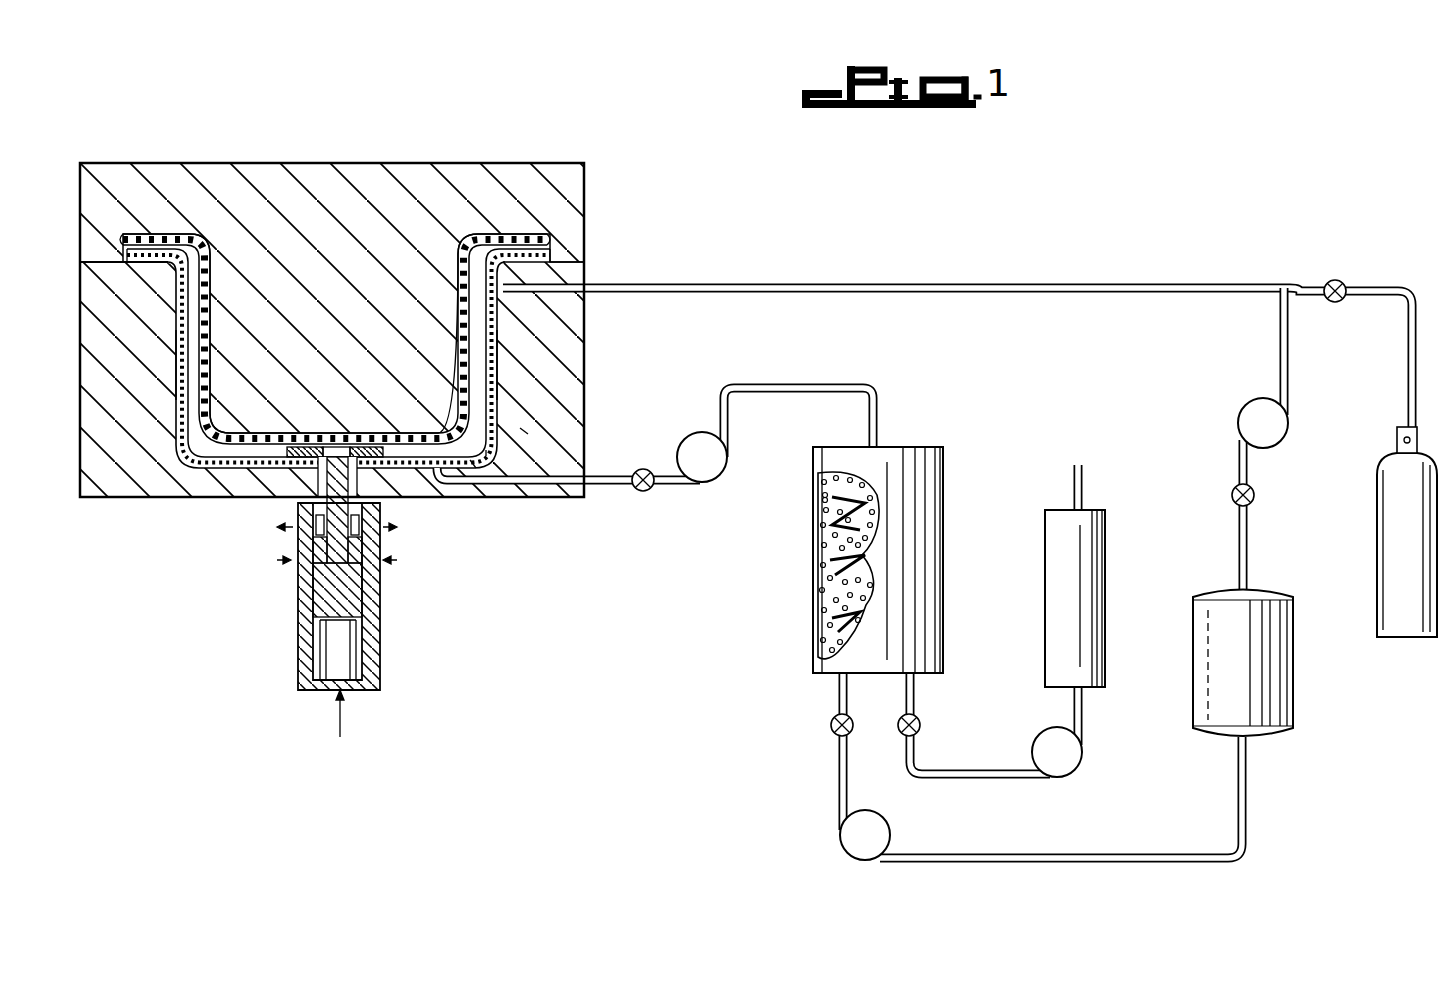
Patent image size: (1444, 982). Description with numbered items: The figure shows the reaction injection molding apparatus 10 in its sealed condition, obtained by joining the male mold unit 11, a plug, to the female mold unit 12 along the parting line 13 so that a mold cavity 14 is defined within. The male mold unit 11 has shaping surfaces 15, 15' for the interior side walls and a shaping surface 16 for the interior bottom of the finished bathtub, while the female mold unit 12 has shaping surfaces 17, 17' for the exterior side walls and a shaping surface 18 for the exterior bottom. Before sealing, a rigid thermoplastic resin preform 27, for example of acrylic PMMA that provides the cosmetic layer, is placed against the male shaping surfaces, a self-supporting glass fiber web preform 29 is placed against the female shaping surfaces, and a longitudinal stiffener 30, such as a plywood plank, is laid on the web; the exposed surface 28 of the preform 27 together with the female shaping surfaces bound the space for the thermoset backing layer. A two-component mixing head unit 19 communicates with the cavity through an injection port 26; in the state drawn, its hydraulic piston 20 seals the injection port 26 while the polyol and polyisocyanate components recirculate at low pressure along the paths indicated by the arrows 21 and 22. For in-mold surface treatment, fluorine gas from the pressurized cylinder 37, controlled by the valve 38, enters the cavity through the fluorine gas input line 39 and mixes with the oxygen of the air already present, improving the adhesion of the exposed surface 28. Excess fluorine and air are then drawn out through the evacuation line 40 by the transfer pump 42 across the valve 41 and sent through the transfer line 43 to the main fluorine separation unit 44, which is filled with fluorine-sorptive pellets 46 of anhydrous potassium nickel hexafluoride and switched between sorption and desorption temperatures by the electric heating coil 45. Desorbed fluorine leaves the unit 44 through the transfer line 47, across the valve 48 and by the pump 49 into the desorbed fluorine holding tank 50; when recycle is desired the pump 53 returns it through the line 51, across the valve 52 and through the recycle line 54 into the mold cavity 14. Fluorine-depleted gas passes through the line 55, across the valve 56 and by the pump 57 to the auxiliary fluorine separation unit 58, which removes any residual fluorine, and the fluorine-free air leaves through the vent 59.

The reaction injection molding apparatus 10 is at (424, 132).
The male mold unit 11 is at (355, 175).
The female mold unit 12 is at (103, 497).
The parting line 13 is at (103, 262).
The mold cavity 14 is at (190, 468).
The male mold unit shaping surface 15 is at (335, 285).
The male mold unit shaping surface 15' is at (338, 295).
The male mold unit shaping surface 16 is at (300, 433).
The female mold unit shaping surface 17 is at (149, 389).
The female mold unit shaping surface 17' is at (569, 365).
The female mold unit shaping surface 18 is at (278, 498).
The two-component mixing head unit 19 is at (298, 652).
The hydraulic piston 20 is at (337, 587).
The low pressure recirculation path of Component A 21 is at (277, 558).
The low pressure recirculation path of Component B 22 is at (395, 545).
The injection port 26 is at (398, 535).
The rigid thermoplastic resin preform 27 is at (472, 462).
The exposed surface of preform 28 is at (485, 453).
The self-supporting glass fiber web preform 29 is at (525, 432).
The longitudinal stiffener 30 is at (357, 450).
The pressurized source of fluorine gas 37 is at (1377, 468).
The valve 38 is at (1336, 280).
The fluorine gas input line 39 is at (615, 288).
The fluorine-air mixture evacuation line 40 is at (603, 477).
The valve 41 is at (643, 491).
The transfer pump 42 is at (716, 482).
The fluorine-air mixture transfer line 43 is at (847, 386).
The main fluorine separation unit 44 is at (947, 447).
The electric heating coil 45 is at (815, 530).
The fluorine-sorptive material 46 is at (818, 580).
The desorbed fluorine transfer line 47 is at (838, 692).
The valve 48 is at (831, 729).
The transfer pump 49 is at (847, 822).
The desorbed fluorine holding tank 50 is at (1193, 633).
The desorbed fluorine transfer line 51 is at (1238, 534).
The valve 52 is at (1231, 493).
The transfer pump 53 is at (1253, 438).
The desorbed fluorine recycle line 54 is at (1280, 356).
The residual fluorine-air mixture transfer line 55 is at (915, 693).
The valve 56 is at (912, 735).
The transfer pump 57 is at (1047, 737).
The auxiliary fluorine separation unit 58 is at (1055, 592).
The vent for fluorine-free air 59 is at (1072, 486).